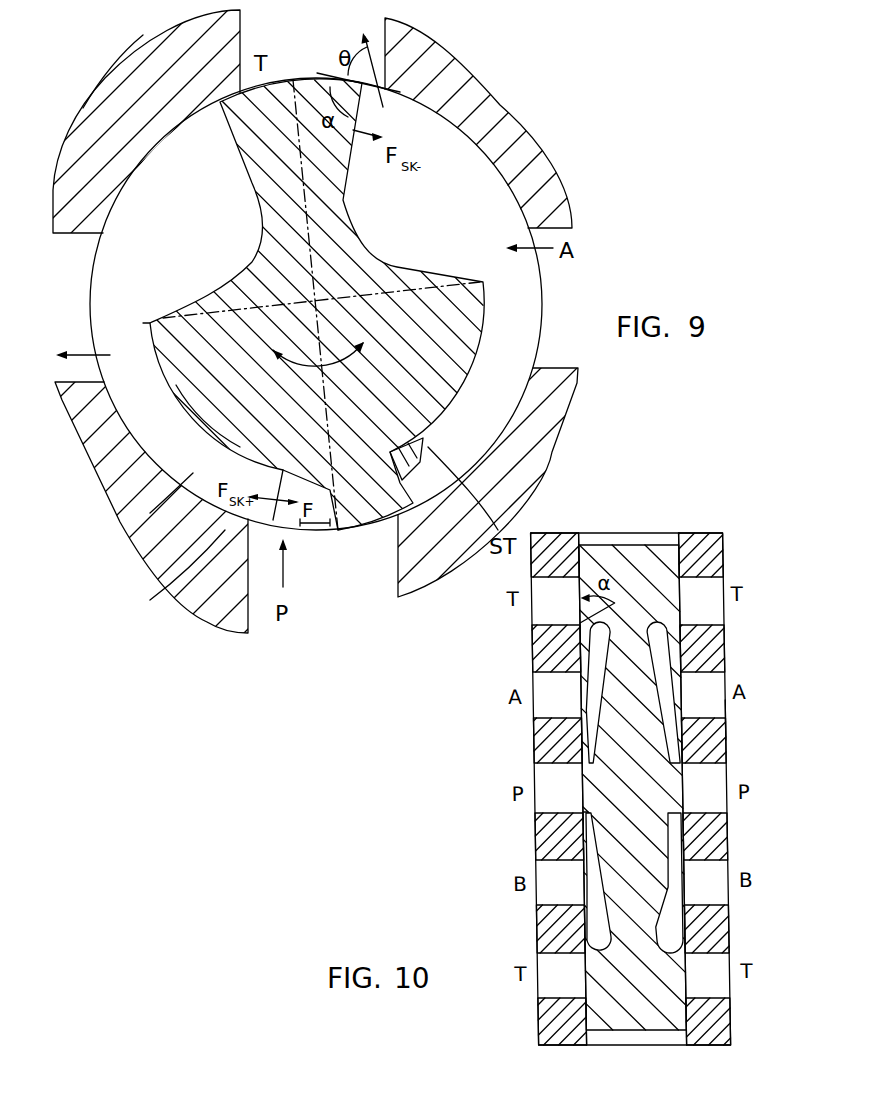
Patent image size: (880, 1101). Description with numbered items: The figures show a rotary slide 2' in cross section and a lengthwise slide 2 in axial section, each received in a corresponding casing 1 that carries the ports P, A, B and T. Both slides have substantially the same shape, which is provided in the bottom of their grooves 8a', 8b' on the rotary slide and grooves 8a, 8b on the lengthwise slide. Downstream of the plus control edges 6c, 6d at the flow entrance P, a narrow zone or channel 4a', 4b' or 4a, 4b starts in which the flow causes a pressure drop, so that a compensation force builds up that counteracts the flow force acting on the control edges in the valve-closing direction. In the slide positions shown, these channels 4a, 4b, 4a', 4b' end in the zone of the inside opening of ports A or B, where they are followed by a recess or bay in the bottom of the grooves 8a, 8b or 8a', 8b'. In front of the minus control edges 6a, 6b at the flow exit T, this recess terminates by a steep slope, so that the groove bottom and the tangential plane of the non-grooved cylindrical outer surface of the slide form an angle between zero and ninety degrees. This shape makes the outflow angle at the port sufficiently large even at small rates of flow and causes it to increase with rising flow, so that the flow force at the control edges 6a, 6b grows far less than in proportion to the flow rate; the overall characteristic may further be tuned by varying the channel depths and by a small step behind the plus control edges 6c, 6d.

In FIG. 9, the casing 1 is at (493, 113).
In FIG. 10, the casing 1 is at (572, 533).
In FIG. 10, the lengthwise slide 2 is at (636, 761).
In FIG. 9, the rotary slide 2' is at (360, 304).
In FIG. 10, the channel 4a is at (766, 709).
In FIG. 9, the channel 4a' is at (487, 485).
In FIG. 10, the channel 4b is at (656, 836).
In FIG. 9, the channel 4b' is at (151, 507).
In FIG. 9, the control edge 6a is at (387, 86).
In FIG. 10, the control edge 6a is at (590, 643).
In FIG. 9, the control edge 6b is at (233, 90).
In FIG. 10, the control edge 6b is at (584, 948).
In FIG. 9, the control edge 6c is at (410, 507).
In FIG. 10, the control edge 6c is at (578, 753).
In FIG. 9, the control edge 6d is at (195, 612).
In FIG. 10, the control edge 6d is at (583, 813).
In FIG. 10, the groove 8a is at (626, 660).
In FIG. 9, the groove 8a' is at (519, 289).
In FIG. 10, the groove 8b is at (727, 910).
In FIG. 9, the groove 8b' is at (168, 215).